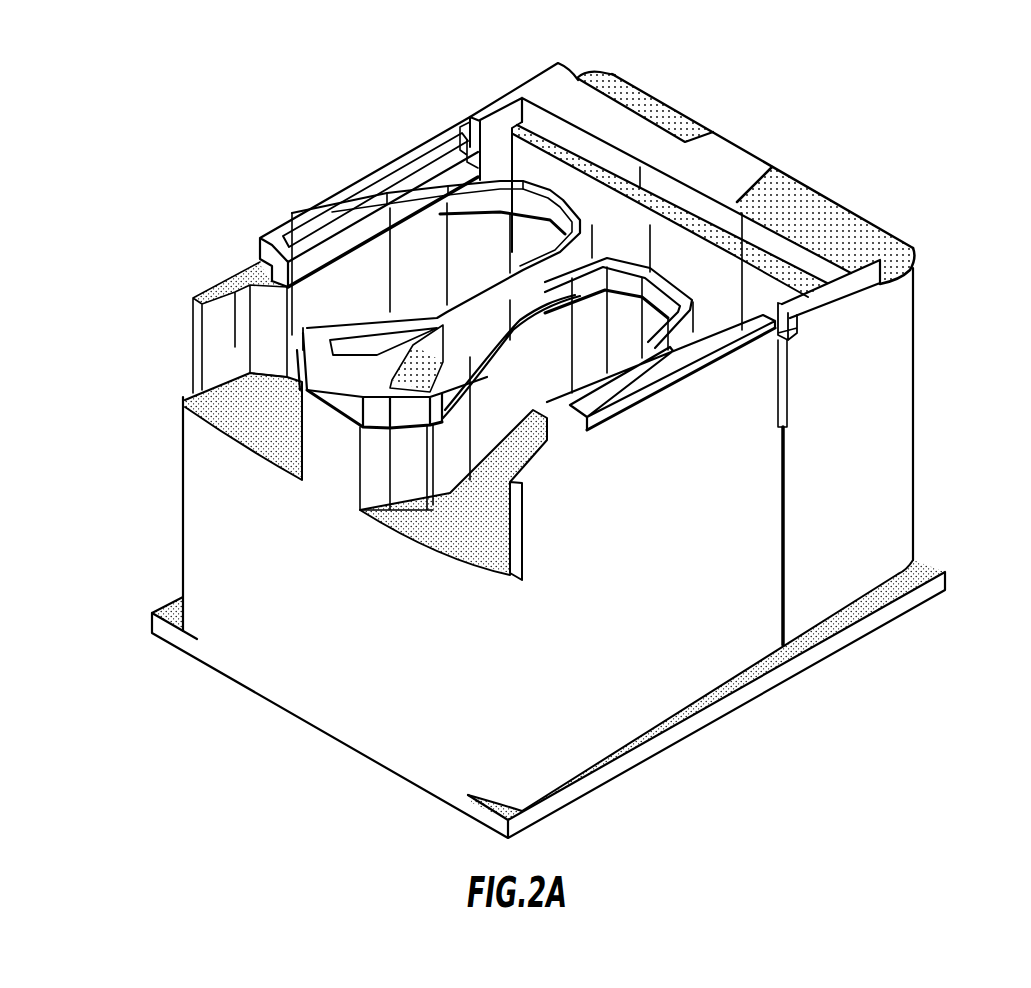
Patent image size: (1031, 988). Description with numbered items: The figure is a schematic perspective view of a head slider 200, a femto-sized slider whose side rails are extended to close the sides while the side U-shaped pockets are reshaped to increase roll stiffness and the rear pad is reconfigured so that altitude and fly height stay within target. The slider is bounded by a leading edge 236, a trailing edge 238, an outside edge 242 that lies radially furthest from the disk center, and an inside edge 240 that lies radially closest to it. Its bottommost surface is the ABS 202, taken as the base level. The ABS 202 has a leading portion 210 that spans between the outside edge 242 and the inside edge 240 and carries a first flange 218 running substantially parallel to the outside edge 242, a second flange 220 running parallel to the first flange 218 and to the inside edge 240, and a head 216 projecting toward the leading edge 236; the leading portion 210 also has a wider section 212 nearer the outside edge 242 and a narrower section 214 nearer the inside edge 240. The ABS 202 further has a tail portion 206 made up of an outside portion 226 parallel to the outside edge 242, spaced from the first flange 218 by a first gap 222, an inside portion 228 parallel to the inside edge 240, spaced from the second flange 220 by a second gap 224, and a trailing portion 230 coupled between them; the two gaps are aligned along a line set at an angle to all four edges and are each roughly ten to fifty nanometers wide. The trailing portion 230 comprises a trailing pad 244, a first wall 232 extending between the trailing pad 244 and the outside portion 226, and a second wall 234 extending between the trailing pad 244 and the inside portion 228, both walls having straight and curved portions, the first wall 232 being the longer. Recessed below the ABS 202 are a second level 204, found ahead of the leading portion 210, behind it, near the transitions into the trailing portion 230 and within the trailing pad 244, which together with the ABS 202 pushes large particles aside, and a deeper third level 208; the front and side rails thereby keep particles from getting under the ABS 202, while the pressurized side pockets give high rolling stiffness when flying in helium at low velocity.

The head slider 200 is at (260, 110).
The ABS 202 is at (523, 78).
The second level 204 is at (833, 220).
The tail portion 206 is at (277, 387).
The third level 208 is at (706, 340).
The leading portion 210 is at (703, 157).
The section 212 is at (620, 122).
The section 214 is at (893, 232).
The head 216 is at (760, 153).
The first flange 218 is at (500, 102).
The second flange 220 is at (790, 311).
The first gap 222 is at (463, 128).
The second gap 224 is at (780, 363).
The outside portion 226 is at (313, 210).
The inside portion 228 is at (650, 390).
The trailing portion 230 is at (487, 348).
The first wall 232 is at (477, 215).
The second wall 234 is at (670, 300).
The leading edge 236 is at (700, 118).
The trailing edge 238 is at (205, 665).
The inside edge 240 is at (647, 760).
The outside edge 242 is at (173, 603).
The trailing pad 244 is at (357, 392).